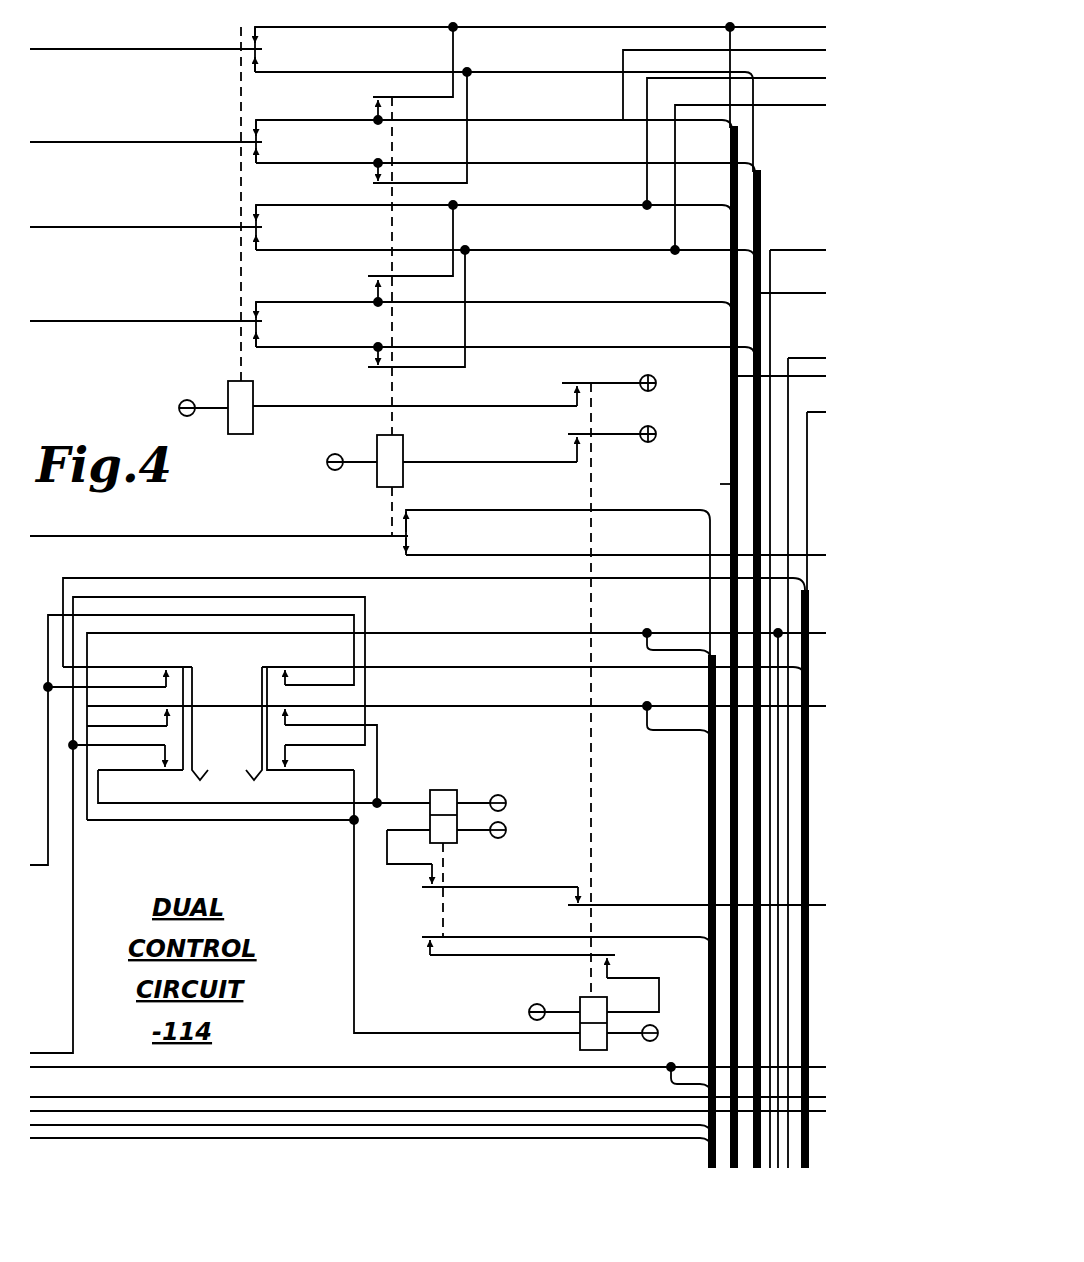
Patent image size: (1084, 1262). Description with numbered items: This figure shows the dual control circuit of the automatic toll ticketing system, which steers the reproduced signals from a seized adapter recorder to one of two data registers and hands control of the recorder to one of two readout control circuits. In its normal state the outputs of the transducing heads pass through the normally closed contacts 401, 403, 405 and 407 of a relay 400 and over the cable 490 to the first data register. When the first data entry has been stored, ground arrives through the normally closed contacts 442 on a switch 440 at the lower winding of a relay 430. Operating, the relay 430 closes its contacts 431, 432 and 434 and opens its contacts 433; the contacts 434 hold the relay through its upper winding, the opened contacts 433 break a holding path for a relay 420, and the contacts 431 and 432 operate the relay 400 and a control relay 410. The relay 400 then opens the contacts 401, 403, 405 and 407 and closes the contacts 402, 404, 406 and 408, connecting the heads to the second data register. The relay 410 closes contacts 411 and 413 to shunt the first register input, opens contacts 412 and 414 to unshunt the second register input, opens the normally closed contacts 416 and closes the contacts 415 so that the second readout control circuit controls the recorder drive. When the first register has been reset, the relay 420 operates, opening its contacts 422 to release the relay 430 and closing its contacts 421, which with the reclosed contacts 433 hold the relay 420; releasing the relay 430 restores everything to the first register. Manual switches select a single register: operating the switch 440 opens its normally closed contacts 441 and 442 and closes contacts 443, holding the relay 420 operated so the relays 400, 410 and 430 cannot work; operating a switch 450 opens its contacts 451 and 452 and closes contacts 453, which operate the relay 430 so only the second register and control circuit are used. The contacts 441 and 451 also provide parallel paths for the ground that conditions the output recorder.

The relay 400 is at (245, 434).
The contacts 401 is at (252, 46).
The contacts 402 is at (264, 53).
The contacts 403 is at (250, 136).
The contacts 404 is at (264, 146).
The contacts 405 is at (252, 222).
The contacts 406 is at (264, 232).
The contacts 407 is at (250, 316).
The contacts 408 is at (264, 329).
The control relay 410 is at (405, 440).
The contacts 411 is at (372, 98).
The contacts 412 is at (372, 184).
The contacts 413 is at (366, 278).
The contacts 414 is at (366, 368).
The contacts 415 is at (412, 524).
The contacts 416 is at (400, 544).
The relay 420 is at (480, 764).
The contacts 421 is at (426, 878).
The contacts 422 is at (426, 942).
The relay 430 is at (578, 1046).
The contacts 431 is at (562, 392).
The contacts 432 is at (576, 438).
The contacts 433 is at (566, 902).
The contacts 434 is at (616, 960).
The switch 440 is at (150, 836).
The contacts 441 is at (160, 662).
The contacts 442 is at (162, 706).
The contacts 443 is at (160, 756).
The switch 450 is at (250, 836).
The contacts 451 is at (318, 664).
The contacts 452 is at (300, 708).
The contacts 453 is at (290, 760).
The cable 490 is at (704, 483).